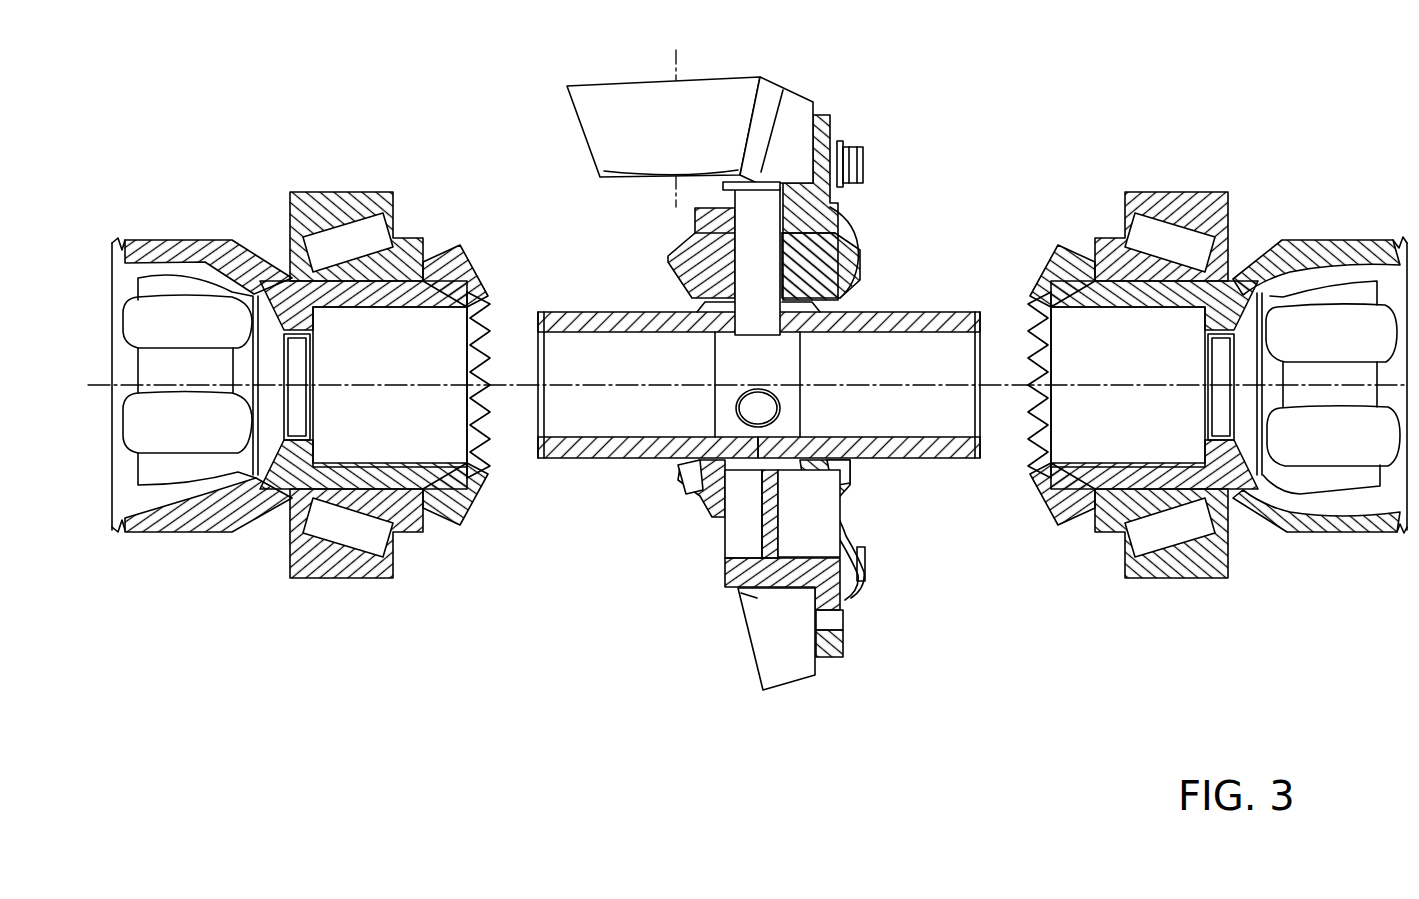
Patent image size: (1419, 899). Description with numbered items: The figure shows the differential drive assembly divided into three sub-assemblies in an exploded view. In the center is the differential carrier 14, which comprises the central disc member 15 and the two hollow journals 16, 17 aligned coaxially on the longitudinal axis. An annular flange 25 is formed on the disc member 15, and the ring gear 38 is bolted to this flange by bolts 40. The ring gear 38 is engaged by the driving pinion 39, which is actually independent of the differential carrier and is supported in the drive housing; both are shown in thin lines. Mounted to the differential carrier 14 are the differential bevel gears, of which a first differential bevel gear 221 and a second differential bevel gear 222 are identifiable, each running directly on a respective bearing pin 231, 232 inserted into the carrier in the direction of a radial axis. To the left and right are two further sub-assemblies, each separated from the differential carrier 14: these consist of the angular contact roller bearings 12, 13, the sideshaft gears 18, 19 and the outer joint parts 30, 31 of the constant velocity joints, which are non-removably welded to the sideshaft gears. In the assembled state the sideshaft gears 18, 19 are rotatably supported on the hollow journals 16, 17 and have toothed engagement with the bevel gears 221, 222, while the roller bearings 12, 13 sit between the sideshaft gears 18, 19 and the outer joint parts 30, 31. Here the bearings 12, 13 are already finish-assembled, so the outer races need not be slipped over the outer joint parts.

The angular contact roller bearing 12 is at (346, 572).
The angular contact roller bearing 13 is at (1175, 572).
The differential carrier 14 is at (711, 652).
The disc member 15 is at (726, 566).
The hollow journal 16 is at (599, 459).
The hollow journal 17 is at (908, 459).
The sideshaft gear 18 is at (466, 516).
The sideshaft gear 19 is at (1074, 517).
The first differential bevel gear 221 is at (838, 268).
The differential bevel gear 222 is at (690, 488).
The bearing pin 231 is at (768, 268).
The bearing pin 232 is at (722, 488).
The annular flange 25 is at (830, 657).
The outer joint part 30 is at (218, 525).
The outer joint part 31 is at (1308, 527).
The ring gear 38 is at (797, 102).
The driving pinion 39 is at (600, 100).
The bolt 40 is at (866, 160).